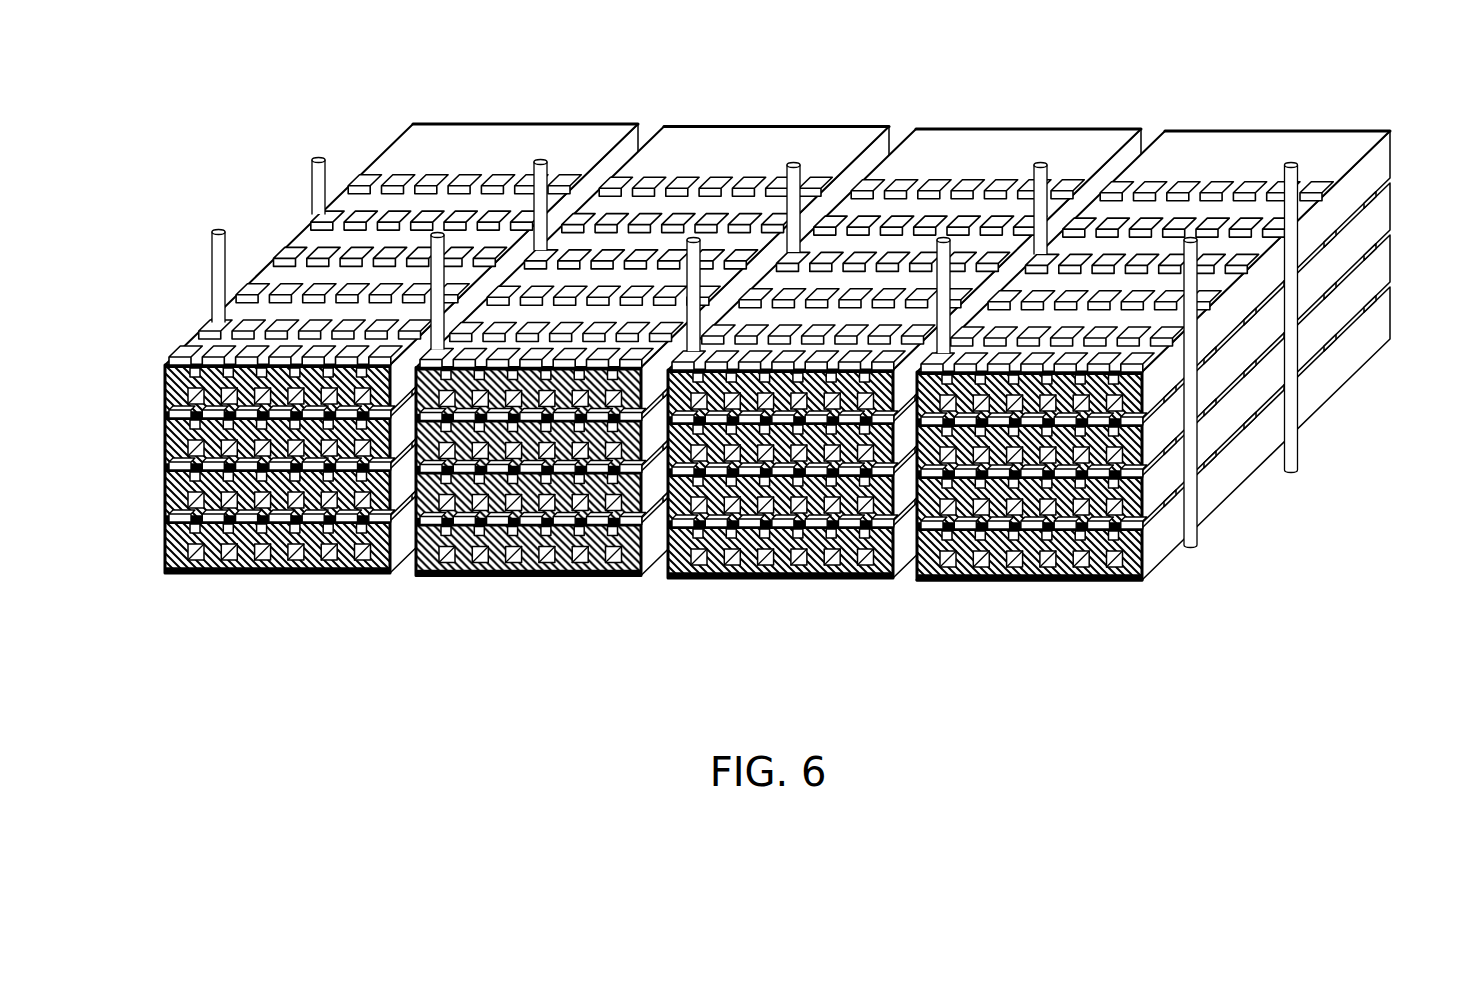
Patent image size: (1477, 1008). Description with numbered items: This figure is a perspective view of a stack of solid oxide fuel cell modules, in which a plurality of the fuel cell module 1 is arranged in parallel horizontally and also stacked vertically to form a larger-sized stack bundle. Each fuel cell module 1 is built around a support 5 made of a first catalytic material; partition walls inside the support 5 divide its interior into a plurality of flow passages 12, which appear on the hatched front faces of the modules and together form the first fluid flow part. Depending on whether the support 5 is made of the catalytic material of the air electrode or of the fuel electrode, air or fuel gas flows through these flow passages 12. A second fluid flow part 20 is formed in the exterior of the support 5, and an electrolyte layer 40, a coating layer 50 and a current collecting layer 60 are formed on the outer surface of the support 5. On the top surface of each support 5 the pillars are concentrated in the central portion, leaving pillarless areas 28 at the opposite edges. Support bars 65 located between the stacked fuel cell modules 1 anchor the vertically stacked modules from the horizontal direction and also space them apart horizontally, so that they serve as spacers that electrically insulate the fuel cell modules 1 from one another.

The fuel cell module 1 is at (170, 445).
The support 5 is at (677, 578).
The flow passages 12 is at (909, 578).
The second fluid flow part 20 is at (1272, 268).
The pillarless areas 28 is at (927, 152).
The electrolyte layer 40 is at (1017, 580).
The coating layer 50 is at (1060, 581).
The current collecting layer 60 is at (1143, 580).
The support bars 65 is at (1290, 472).